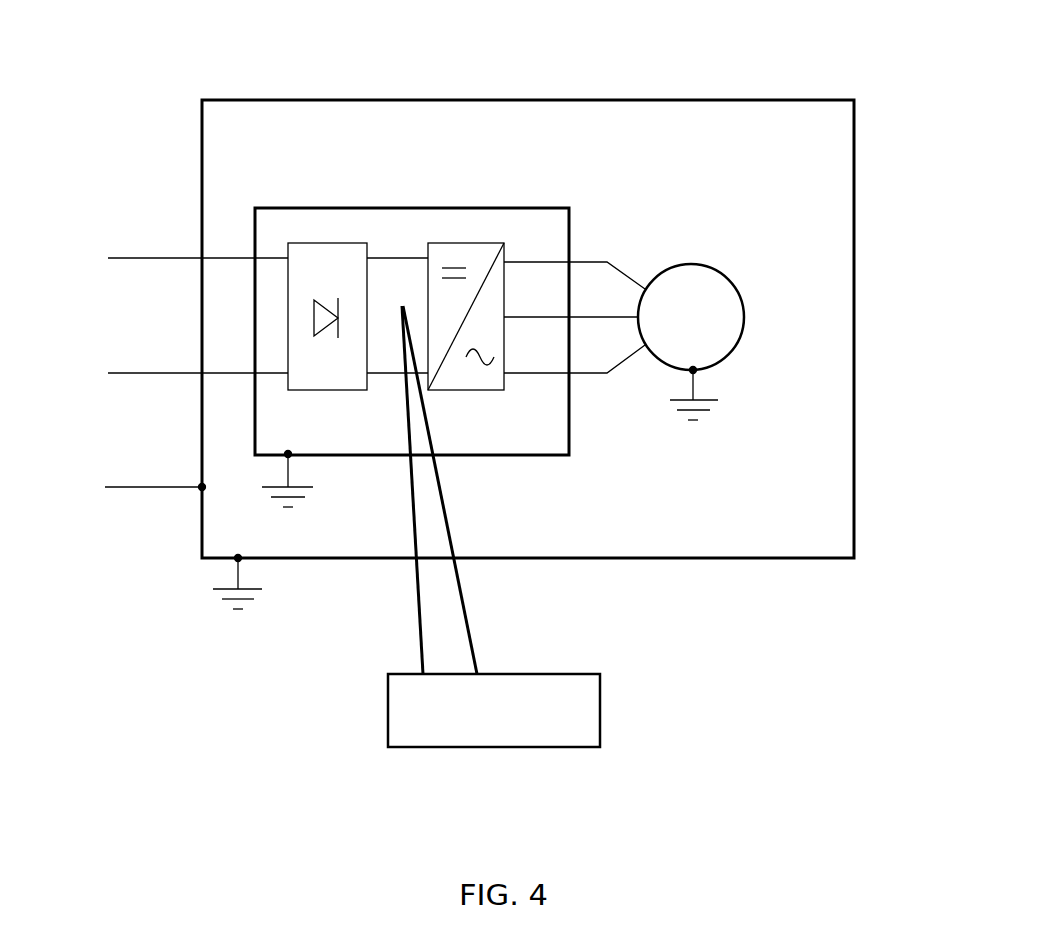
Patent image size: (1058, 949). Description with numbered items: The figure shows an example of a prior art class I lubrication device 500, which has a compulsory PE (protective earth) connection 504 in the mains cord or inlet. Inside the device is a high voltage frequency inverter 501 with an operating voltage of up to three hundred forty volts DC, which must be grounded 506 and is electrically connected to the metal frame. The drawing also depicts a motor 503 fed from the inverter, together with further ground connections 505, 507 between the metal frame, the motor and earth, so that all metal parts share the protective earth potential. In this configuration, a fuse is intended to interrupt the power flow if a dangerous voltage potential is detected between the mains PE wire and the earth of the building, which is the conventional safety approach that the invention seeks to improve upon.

The metal frame 500 is at (378, 90).
The high voltage frequency inverter 501 is at (540, 204).
The motor 503 is at (717, 268).
The compulsory PE (protective earth) connection 504 is at (138, 491).
The metal frame ground connection 505 is at (220, 565).
The grounding of the high voltage frequency inverter 506 is at (300, 518).
The motor ground connection 507 is at (718, 422).